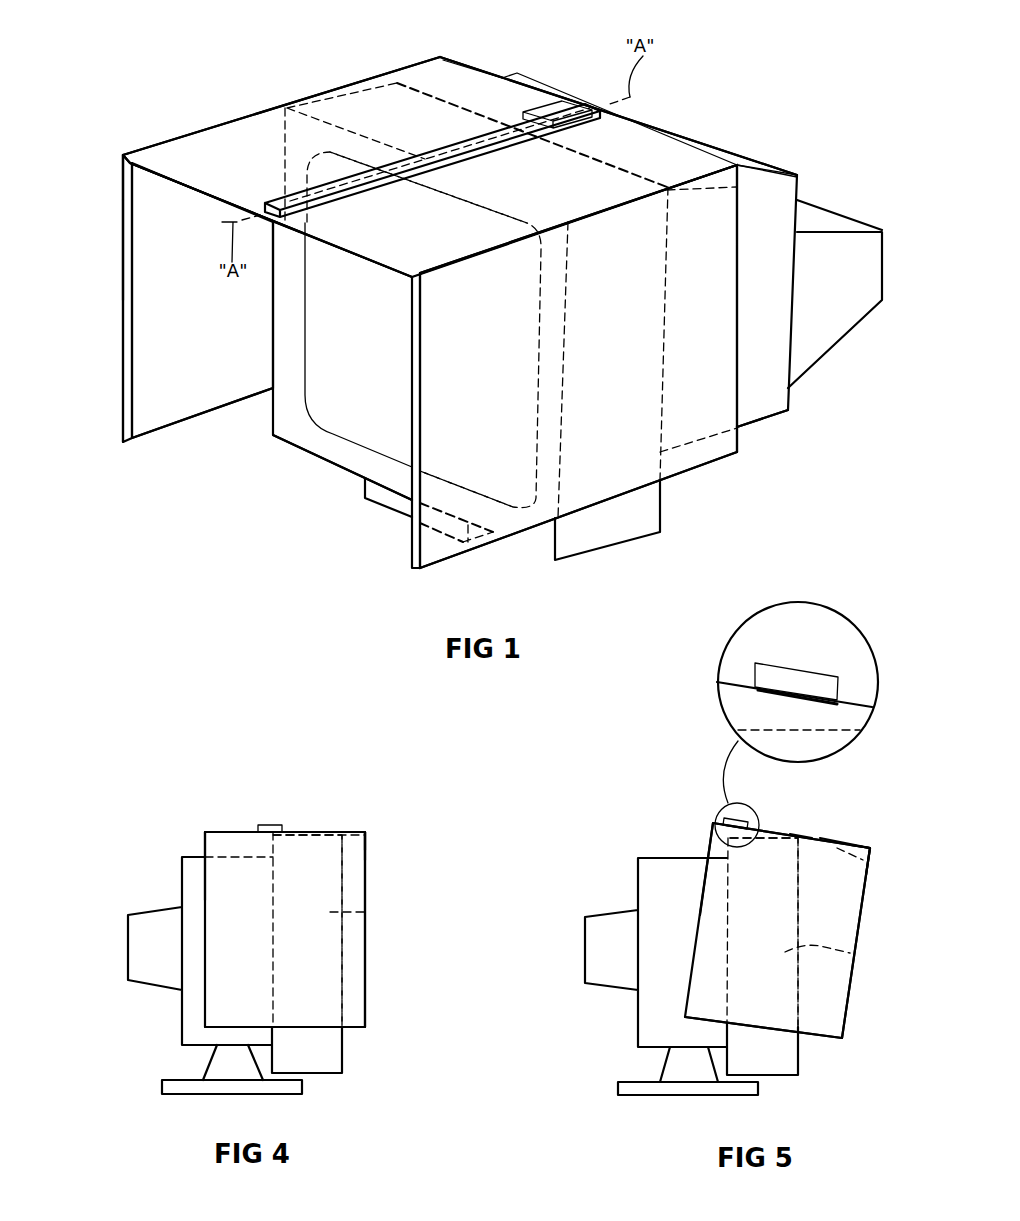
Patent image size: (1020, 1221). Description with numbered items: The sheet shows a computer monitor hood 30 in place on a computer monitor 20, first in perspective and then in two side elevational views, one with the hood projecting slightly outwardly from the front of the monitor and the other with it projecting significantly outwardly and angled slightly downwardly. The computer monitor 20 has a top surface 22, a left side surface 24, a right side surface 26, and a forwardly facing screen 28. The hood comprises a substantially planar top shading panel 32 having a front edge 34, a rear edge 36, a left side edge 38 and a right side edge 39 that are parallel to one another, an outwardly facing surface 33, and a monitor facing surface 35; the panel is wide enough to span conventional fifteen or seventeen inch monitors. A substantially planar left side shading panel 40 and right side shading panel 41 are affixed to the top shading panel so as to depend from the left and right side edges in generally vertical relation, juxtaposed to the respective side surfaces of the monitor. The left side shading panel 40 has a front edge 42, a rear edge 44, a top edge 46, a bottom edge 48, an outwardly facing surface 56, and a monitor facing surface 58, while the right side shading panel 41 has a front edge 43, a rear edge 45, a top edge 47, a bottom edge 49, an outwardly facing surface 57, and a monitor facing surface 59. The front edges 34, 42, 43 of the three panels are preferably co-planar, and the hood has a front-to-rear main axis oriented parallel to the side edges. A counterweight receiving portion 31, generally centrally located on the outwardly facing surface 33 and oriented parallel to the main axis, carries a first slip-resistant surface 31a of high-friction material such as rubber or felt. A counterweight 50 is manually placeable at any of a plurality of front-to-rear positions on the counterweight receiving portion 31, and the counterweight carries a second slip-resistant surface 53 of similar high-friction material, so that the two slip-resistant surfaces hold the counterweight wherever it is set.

In FIG. 1, the computer monitor 20 is at (298, 525).
In FIG. 4, the computer monitor 20 is at (108, 893).
In FIG. 5, the computer monitor 20 is at (572, 893).
In FIG. 1, the top surface 22 is at (362, 115).
In FIG. 1, the left side surface 24 is at (275, 305).
In FIG. 4, the left side surface 24 is at (333, 1058).
In FIG. 5, the left side surface 24 is at (788, 1058).
In FIG. 1, the right side surface 26 is at (632, 517).
In FIG. 1, the forwardly facing screen 28 is at (358, 352).
In FIG. 4, the forwardly facing screen 28 is at (365, 912).
In FIG. 5, the forwardly facing screen 28 is at (857, 952).
In FIG. 1, the computer monitor hood 30 is at (175, 152).
In FIG. 4, the computer monitor hood 30 is at (210, 845).
In FIG. 5, the computer monitor hood 30 is at (713, 832).
In FIG. 1, the counterweight receiving portion 31 is at (355, 196).
In FIG. 4, the counterweight receiving portion 31 is at (218, 830).
In FIG. 5, the counterweight receiving portion 31 is at (833, 842).
In FIG. 1, the first slip-resistant surface 31a is at (400, 162).
In FIG. 4, the first slip-resistant surface 31a is at (237, 830).
In FIG. 5, the first slip-resistant surface 31a is at (808, 835).
In FIG. 1, the top shading panel 32 is at (200, 177).
In FIG. 4, the top shading panel 32 is at (355, 830).
In FIG. 5, the top shading panel 32 is at (852, 843).
In FIG. 1, the outwardly facing surface 33 is at (232, 169).
In FIG. 1, the front edge 34 is at (224, 196).
In FIG. 1, the monitor facing surface 35 is at (410, 277).
In FIG. 4, the monitor facing surface 35 is at (360, 837).
In FIG. 5, the monitor facing surface 35 is at (863, 860).
In FIG. 1, the rear edge 36 is at (468, 62).
In FIG. 1, the left side edge 38 is at (210, 128).
In FIG. 1, the right side edge 39 is at (580, 218).
In FIG. 1, the left side shading panel 40 is at (143, 347).
In FIG. 4, the left side shading panel 40 is at (233, 950).
In FIG. 5, the left side shading panel 40 is at (818, 902).
In FIG. 1, the right side shading panel 41 is at (430, 553).
In FIG. 1, the front edge 42 is at (127, 288).
In FIG. 4, the front edge 42 is at (365, 973).
In FIG. 5, the front edge 42 is at (853, 990).
In FIG. 1, the front edge 43 is at (412, 528).
In FIG. 4, the rear edge 44 is at (203, 1008).
In FIG. 5, the rear edge 44 is at (683, 990).
In FIG. 1, the rear edge 45 is at (738, 435).
In FIG. 1, the top edge 46 is at (135, 149).
In FIG. 4, the top edge 46 is at (300, 830).
In FIG. 5, the top edge 46 is at (828, 840).
In FIG. 1, the top edge 47 is at (470, 257).
In FIG. 1, the bottom edge 48 is at (174, 430).
In FIG. 4, the bottom edge 48 is at (307, 1030).
In FIG. 5, the bottom edge 48 is at (823, 1040).
In FIG. 1, the bottom edge 49 is at (485, 548).
In FIG. 1, the counterweight 50 is at (582, 127).
In FIG. 4, the counterweight 50 is at (276, 825).
In FIG. 5, the counterweight 50 is at (744, 821).
In FIG. 5, the second slip-resistant surface 53 is at (768, 694).
In FIG. 1, the outwardly facing surface 56 is at (123, 248).
In FIG. 4, the outwardly facing surface 56 is at (297, 950).
In FIG. 5, the outwardly facing surface 56 is at (756, 990).
In FIG. 1, the outwardly facing surface 57 is at (476, 374).
In FIG. 1, the monitor facing surface 58 is at (190, 374).
In FIG. 1, the monitor facing surface 59 is at (434, 393).